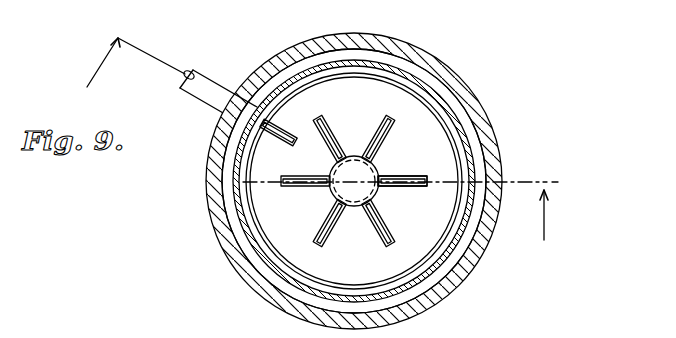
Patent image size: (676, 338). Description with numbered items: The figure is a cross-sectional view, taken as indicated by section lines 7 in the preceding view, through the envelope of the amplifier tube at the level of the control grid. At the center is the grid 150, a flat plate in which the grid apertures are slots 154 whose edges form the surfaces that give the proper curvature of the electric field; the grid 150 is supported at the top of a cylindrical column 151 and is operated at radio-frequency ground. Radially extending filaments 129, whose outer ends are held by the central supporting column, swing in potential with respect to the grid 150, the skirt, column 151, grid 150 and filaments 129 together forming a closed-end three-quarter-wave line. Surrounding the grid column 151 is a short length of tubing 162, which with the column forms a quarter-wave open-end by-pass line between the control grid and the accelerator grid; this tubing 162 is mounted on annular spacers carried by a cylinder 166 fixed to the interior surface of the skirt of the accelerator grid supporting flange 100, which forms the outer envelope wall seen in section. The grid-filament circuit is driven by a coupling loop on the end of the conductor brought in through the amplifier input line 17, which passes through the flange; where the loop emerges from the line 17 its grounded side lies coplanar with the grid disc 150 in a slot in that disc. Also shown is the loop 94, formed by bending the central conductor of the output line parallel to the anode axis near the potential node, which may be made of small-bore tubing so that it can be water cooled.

The section line 7- 7 is at (326, 136).
The amplifier input line 17 is at (191, 69).
The loop 94 is at (277, 125).
The accelerator grid supporting flange 100 is at (441, 62).
The filaments 129 is at (407, 178).
The grid 150 is at (333, 112).
The cylindrical column 151 is at (398, 87).
The slots 154 is at (396, 126).
The short length of tubing 162 is at (333, 63).
The cylinder 166 is at (385, 53).